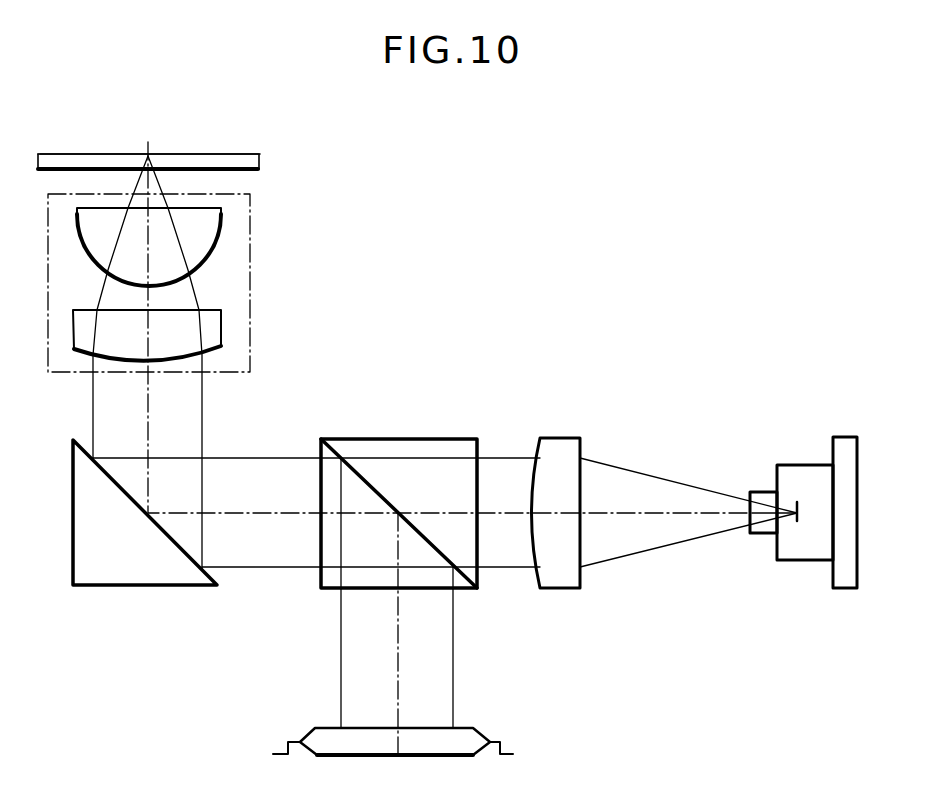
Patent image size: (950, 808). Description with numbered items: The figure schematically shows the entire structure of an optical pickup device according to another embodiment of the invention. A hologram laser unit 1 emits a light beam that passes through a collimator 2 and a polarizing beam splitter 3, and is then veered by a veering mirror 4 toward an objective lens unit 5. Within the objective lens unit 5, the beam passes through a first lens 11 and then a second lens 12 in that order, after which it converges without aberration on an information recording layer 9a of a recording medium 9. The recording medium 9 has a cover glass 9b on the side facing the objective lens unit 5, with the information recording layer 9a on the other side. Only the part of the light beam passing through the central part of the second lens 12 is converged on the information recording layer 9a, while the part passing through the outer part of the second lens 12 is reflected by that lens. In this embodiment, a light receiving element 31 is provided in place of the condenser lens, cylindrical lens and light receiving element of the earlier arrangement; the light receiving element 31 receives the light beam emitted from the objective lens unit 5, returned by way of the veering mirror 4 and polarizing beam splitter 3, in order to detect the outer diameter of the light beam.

The hologram laser unit 1 is at (793, 463).
The collimator 2 is at (545, 435).
The polarizing beam splitter 3 is at (383, 437).
The veering mirror 4 is at (143, 588).
The objective lens unit 5 is at (250, 268).
The recording medium 9 is at (260, 163).
The information recording layer 9a is at (218, 154).
The cover glass 9b is at (242, 173).
The first lens 11 is at (213, 325).
The second lens 12 is at (213, 220).
The light receiving element 31 is at (483, 732).